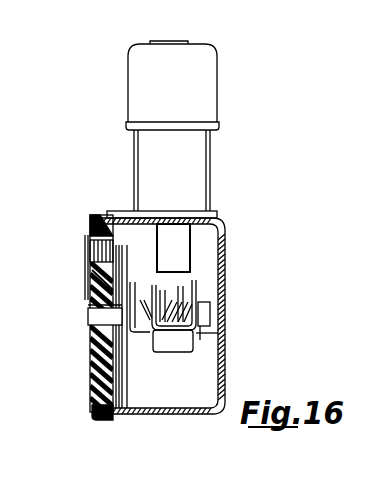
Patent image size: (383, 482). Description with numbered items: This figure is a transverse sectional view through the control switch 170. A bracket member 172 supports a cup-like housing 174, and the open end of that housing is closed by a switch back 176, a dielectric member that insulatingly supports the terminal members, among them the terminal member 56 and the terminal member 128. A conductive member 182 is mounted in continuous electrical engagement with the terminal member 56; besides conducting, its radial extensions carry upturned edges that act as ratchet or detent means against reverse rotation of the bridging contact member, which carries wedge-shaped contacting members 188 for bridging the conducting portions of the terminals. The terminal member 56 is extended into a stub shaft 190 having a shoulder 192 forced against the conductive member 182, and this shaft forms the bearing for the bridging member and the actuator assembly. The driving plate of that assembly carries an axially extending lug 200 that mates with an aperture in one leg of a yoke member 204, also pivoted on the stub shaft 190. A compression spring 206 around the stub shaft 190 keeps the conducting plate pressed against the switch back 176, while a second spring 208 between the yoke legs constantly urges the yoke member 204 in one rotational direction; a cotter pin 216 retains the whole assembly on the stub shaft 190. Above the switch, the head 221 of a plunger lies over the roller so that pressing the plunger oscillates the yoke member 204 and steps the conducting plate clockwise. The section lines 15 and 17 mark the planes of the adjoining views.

The control switch 170 is at (105, 104).
The section line 15 is at (171, 130).
The section line 17 is at (128, 218).
The bracket member 172 is at (215, 214).
The cup-like housing 174 is at (194, 316).
The switch back 176 is at (89, 226).
The terminal member 128 is at (90, 257).
The wedge-shaped contacting members 188 is at (92, 280).
The shoulder 192 is at (92, 305).
The terminal member 56 is at (92, 318).
The conductive member 182 is at (94, 352).
The compression spring 206 is at (94, 392).
The lug 200 is at (135, 334).
The yoke member 204 is at (186, 355).
The stub shaft 190 is at (207, 310).
The second spring 208 is at (208, 310).
The cotter pin 216 is at (200, 333).
The head 221 is at (178, 236).